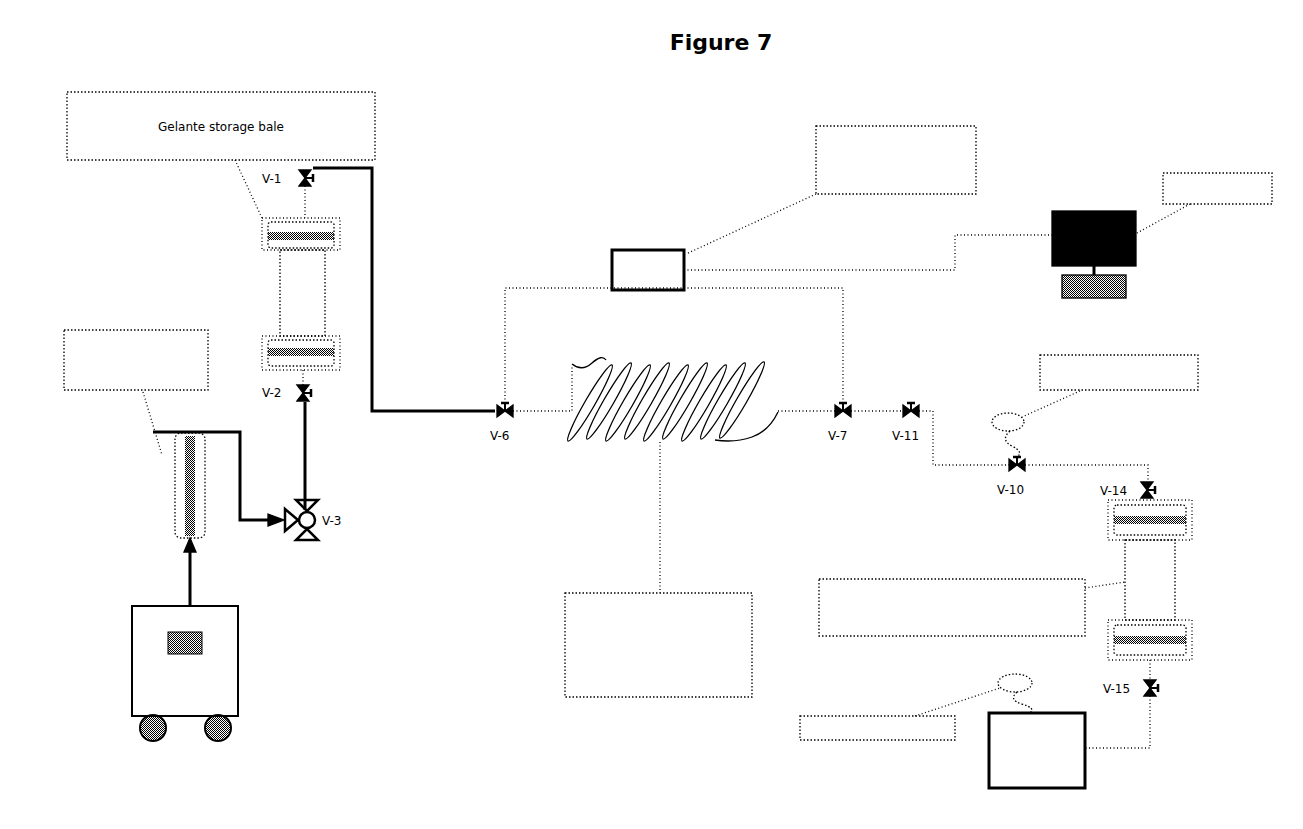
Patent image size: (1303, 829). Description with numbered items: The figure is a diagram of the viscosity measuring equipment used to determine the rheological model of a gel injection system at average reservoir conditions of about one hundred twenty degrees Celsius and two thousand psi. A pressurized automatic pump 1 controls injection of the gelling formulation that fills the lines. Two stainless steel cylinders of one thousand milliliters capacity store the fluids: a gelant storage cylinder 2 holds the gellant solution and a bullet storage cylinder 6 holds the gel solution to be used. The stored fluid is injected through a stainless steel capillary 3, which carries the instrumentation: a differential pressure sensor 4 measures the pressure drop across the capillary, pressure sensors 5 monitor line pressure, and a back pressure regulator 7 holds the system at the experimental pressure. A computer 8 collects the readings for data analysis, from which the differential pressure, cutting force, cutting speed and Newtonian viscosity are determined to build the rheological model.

The automatic pump 1 is at (174, 535).
The gelant storage cylinder 2 is at (291, 294).
The stainless steel capillary 3 is at (671, 527).
The differential pressure transducer 4 is at (782, 208).
The pressure sensor 5 is at (999, 547).
The bullet solution storage cylinder 6 is at (1005, 580).
The back pressure regulator 7 is at (1037, 750).
The computer 8 is at (1162, 235).